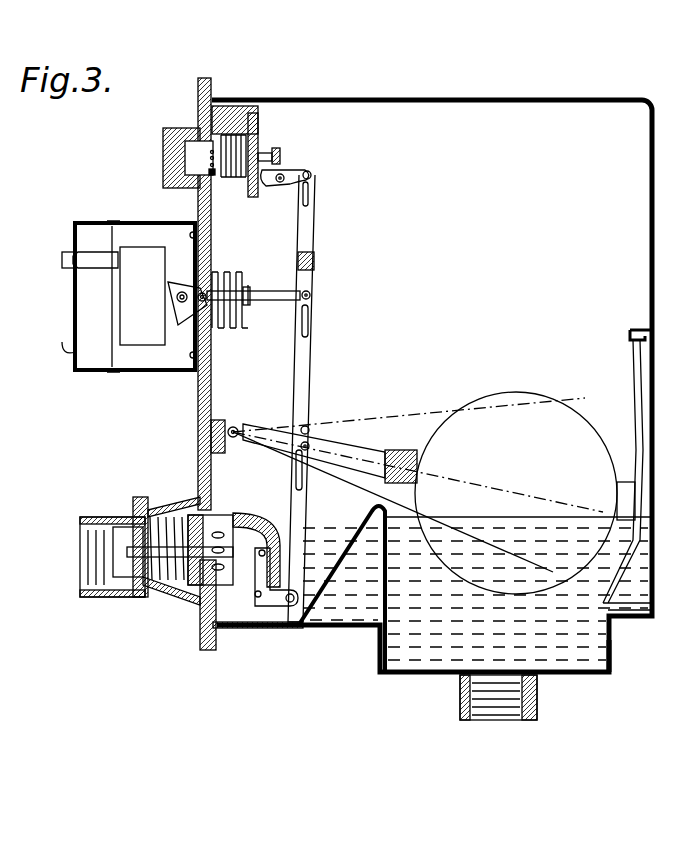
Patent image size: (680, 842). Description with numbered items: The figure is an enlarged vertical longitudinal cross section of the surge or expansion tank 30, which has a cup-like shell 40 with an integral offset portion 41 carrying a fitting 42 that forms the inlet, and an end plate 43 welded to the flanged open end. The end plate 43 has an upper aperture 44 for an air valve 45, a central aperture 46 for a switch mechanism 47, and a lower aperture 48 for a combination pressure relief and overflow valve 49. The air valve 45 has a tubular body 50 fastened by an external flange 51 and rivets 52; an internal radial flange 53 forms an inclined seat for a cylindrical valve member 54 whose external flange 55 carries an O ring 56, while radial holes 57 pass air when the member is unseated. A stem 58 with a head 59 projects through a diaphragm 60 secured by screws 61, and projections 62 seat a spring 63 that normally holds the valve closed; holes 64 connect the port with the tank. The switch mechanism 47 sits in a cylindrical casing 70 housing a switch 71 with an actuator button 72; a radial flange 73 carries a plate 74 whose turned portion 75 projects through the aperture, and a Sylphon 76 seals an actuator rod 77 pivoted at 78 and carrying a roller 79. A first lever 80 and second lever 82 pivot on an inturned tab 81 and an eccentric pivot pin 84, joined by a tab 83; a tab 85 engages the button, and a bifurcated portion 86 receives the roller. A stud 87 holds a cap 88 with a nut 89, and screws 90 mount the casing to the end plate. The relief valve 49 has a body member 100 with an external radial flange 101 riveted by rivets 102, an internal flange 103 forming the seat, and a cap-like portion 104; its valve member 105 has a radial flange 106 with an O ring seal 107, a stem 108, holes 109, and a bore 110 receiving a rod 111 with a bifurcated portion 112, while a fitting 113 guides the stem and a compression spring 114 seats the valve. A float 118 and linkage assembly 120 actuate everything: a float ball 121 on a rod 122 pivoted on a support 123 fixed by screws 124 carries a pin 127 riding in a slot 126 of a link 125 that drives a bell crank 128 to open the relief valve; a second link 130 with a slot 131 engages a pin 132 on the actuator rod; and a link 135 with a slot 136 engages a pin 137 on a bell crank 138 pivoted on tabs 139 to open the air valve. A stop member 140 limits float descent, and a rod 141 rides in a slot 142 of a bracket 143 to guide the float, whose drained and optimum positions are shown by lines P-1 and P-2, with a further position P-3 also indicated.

The surge or expansion tank 30 is at (603, 91).
The shell or casing 40 is at (512, 98).
The offset portion 41 is at (611, 652).
The fitting 42 is at (538, 697).
The end plate 43 is at (198, 424).
The upper aperture 44 is at (198, 125).
The air valve 45 is at (163, 186).
The aperture 46 is at (228, 270).
The switch mechanism 47 is at (66, 232).
The aperture 48 is at (218, 513).
The combination pressure relief and overflow valve 49 is at (126, 501).
The tubular body 50 is at (163, 140).
The external flange 51 is at (212, 100).
The rivets 52 is at (240, 106).
The internal radial flange 53 is at (172, 130).
The valve member 54 is at (208, 152).
The external radial flange 55 is at (226, 117).
The O ring 56 is at (198, 192).
The radial holes 57 is at (208, 164).
The stem 58 is at (280, 156).
The head 59 is at (295, 178).
The diaphragm 60 is at (258, 118).
The screws 61 is at (316, 116).
The projections 62 is at (246, 180).
The spring 63 is at (262, 148).
The holes 64 is at (228, 180).
The cylindrical casing 70 is at (168, 372).
The switch 71 is at (122, 300).
The actuator button 72 is at (167, 285).
The radial flange 73 is at (187, 245).
The plate 74 is at (208, 255).
The outwardly turned portion 75 is at (235, 272).
The Sylphon 76 is at (248, 305).
The actuator link or rod 77 is at (278, 290).
The pivot 78 is at (236, 310).
The roller 79 is at (222, 328).
The first lever 80 is at (187, 309).
The inturned tab 81 is at (188, 283).
The second lever 82 is at (172, 305).
The tab 83 is at (164, 354).
The pivot pin 84 is at (175, 318).
The tab 85 is at (168, 296).
The bifurcated portion 86 is at (261, 256).
The stud 87 is at (108, 268).
The cap 88 is at (57, 340).
The nut 89 is at (62, 262).
The screws 90 is at (190, 233).
The body member 100 is at (200, 615).
The external radial flange 101 is at (210, 650).
The rivets 102 is at (200, 638).
The internal flange 103 is at (255, 513).
The cap-like portion 104 is at (270, 508).
The valve member 105 is at (256, 606).
The radial flange 106 is at (200, 515).
The O ring seal 107 is at (200, 490).
The stem 108 is at (140, 600).
The holes 109 is at (240, 590).
The bore 110 is at (172, 592).
The rod 111 is at (254, 529).
The bifurcated portion 112 is at (283, 545).
The fitting 113 is at (85, 597).
The compression spring 114 is at (127, 551).
The float 118 is at (452, 396).
The linkage assembly 120 is at (322, 352).
The float ball 121 is at (504, 393).
The rod 122 is at (390, 456).
The support 123 is at (236, 425).
The screws 124 is at (220, 420).
The link 125 is at (300, 510).
The slot 126 is at (303, 487).
The pin 127 is at (312, 442).
The bell crank 128 is at (262, 628).
The second link 130 is at (310, 382).
The slot 131 is at (309, 318).
The pin 132 is at (311, 294).
The link 135 is at (315, 268).
The slot 136 is at (316, 200).
The pin 137 is at (312, 176).
The bell crank 138 is at (310, 190).
The tabs 139 is at (270, 188).
The stop member 140 is at (388, 591).
The rod 141 is at (617, 488).
The slot 142 is at (637, 420).
The bracket 143 is at (630, 334).
The position P-1 is at (556, 551).
The position P-2 is at (573, 486).
The position P-3 is at (546, 409).